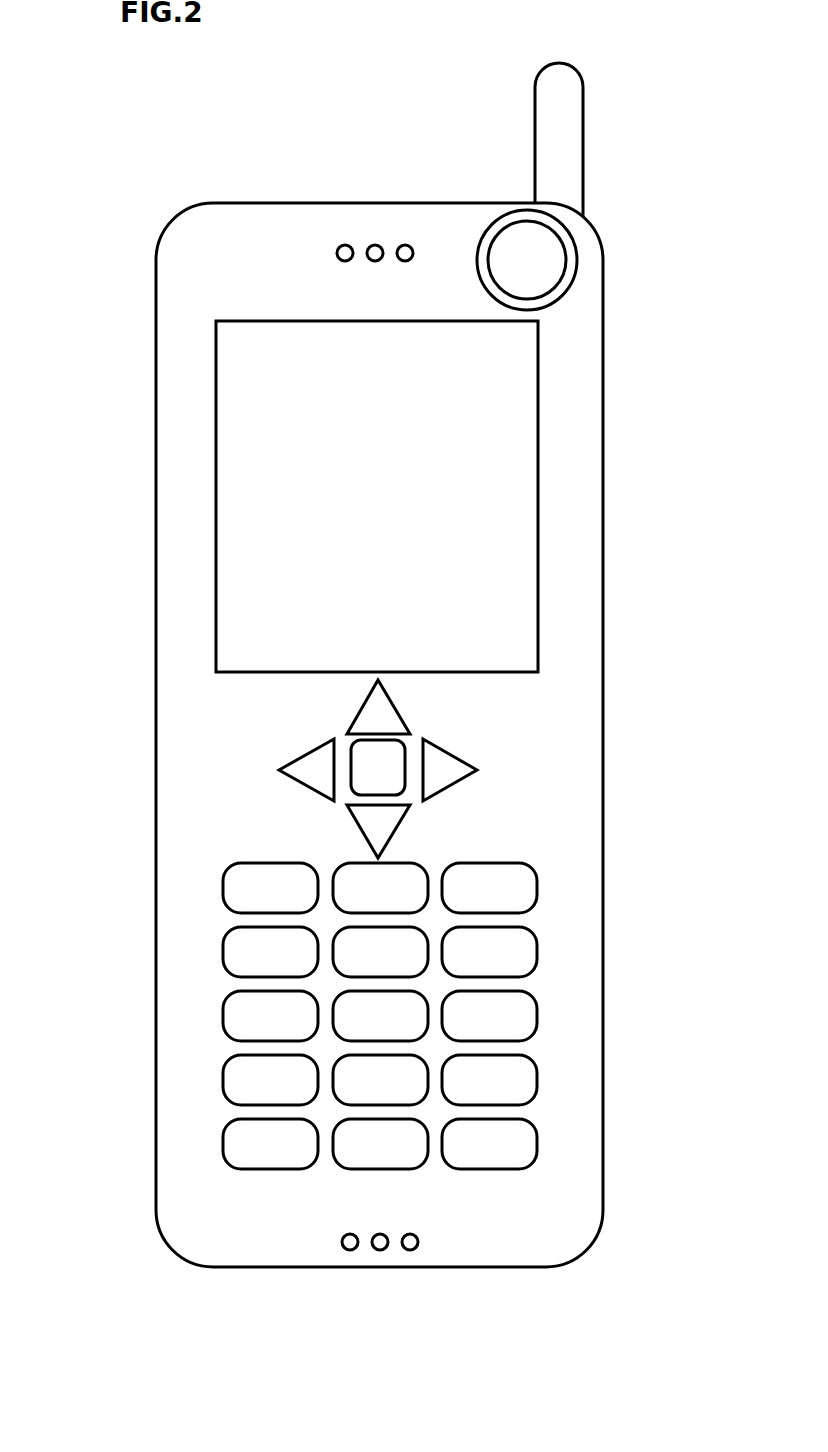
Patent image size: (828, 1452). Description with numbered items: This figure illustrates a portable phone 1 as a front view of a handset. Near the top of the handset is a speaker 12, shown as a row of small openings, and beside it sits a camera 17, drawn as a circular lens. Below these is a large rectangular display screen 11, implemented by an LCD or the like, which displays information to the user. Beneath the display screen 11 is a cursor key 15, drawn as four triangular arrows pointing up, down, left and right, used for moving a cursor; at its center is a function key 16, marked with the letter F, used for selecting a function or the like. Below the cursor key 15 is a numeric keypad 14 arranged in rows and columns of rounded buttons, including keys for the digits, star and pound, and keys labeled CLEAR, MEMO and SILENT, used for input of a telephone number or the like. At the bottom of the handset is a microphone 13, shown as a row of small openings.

The portable phone 1 is at (227, 222).
The display screen 11 is at (538, 457).
The speaker 12 is at (348, 243).
The microphone 13 is at (428, 1240).
The numeric keypad 14 is at (197, 1015).
The cursor key 15 is at (310, 767).
The function key 16 is at (395, 757).
The camera 17 is at (550, 260).